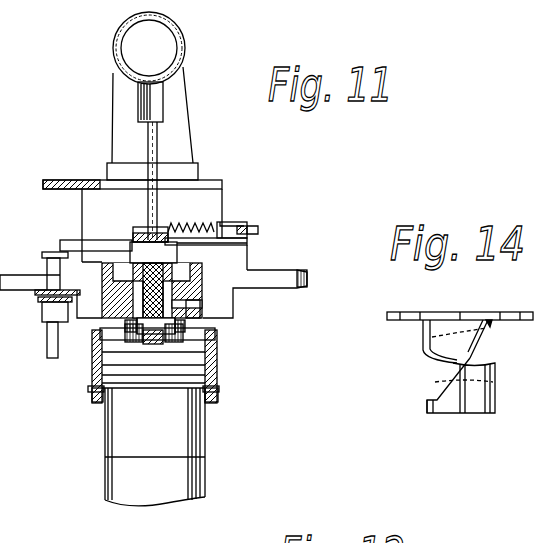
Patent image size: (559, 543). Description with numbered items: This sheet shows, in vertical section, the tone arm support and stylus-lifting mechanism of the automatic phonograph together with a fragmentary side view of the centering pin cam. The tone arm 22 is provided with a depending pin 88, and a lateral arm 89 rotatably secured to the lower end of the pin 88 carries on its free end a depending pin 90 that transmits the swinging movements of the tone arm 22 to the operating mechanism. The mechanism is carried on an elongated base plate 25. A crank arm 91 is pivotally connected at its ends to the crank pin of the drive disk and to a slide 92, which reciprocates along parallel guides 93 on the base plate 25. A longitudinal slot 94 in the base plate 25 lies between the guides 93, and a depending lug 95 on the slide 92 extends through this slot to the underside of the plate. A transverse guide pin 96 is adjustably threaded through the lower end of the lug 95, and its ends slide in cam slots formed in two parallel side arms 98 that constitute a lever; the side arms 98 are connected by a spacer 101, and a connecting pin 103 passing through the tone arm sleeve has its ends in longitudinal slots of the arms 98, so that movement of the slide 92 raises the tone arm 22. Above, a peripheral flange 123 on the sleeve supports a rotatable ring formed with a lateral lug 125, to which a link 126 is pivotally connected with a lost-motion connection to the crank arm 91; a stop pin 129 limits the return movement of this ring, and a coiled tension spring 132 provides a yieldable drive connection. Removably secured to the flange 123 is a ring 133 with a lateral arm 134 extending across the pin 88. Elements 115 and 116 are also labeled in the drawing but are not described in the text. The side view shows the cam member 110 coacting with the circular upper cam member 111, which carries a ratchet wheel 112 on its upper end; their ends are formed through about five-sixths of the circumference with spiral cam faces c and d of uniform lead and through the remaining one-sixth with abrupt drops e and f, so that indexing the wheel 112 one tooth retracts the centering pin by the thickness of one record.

In FIG. 11, the tone arm 22 is at (185, 43).
In FIG. 11, the depending pin 88 is at (157, 142).
In FIG. 11, the ring 133 is at (210, 180).
In FIG. 11, the lateral arm 134 is at (72, 180).
In FIG. 11, the peripheral flange 123 is at (217, 191).
In FIG. 11, the coiled tension spring 132 is at (207, 224).
In FIG. 11, the link 126 is at (260, 228).
In FIG. 11, the lateral lug 125 is at (250, 241).
In FIG. 11, the stop pin 129 is at (249, 252).
In FIG. 11, the base plate 25 is at (297, 269).
In FIG. 11, the parallel guides 93 is at (200, 268).
In FIG. 11, the crank arm 91 is at (133, 235).
In FIG. 11, the slide 92 is at (103, 275).
In FIG. 11, the lateral arm 89 is at (50, 252).
In FIG. 11, the depending pin 90 is at (43, 262).
In FIG. 11, the longitudinal slot 94 is at (222, 300).
In FIG. 11, the depending lug 95 is at (217, 315).
In FIG. 11, the transverse guide pin 96 is at (217, 337).
In FIG. 11, the spacer 101 is at (103, 373).
In FIG. 11, the connecting pin 103 is at (217, 392).
In FIG. 11, the side arms 98 is at (100, 400).
In FIG. 11, the tube 115 is at (123, 438).
In FIG. 11, the tube section 116 is at (120, 470).
In FIG. 14, the ratchet wheel 112 is at (438, 315).
In FIG. 14, the upper cam member 111 is at (473, 353).
In FIG. 14, the cam member 110 is at (448, 408).
In FIG. 14, the abrupt drop f is at (475, 347).
In FIG. 14, the abrupt drop e is at (432, 385).
In FIG. 14, the spiral cam face d is at (437, 360).
In FIG. 14, the spiral cam face c is at (430, 400).